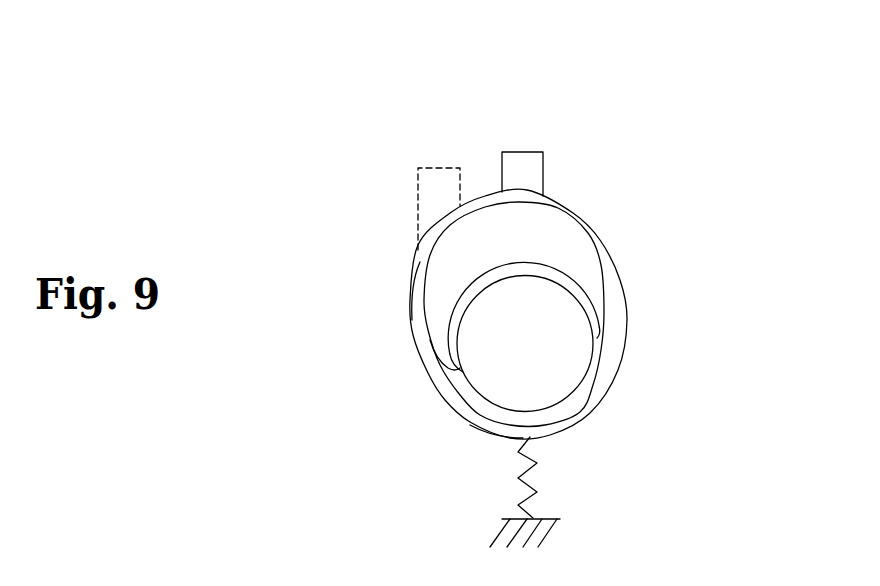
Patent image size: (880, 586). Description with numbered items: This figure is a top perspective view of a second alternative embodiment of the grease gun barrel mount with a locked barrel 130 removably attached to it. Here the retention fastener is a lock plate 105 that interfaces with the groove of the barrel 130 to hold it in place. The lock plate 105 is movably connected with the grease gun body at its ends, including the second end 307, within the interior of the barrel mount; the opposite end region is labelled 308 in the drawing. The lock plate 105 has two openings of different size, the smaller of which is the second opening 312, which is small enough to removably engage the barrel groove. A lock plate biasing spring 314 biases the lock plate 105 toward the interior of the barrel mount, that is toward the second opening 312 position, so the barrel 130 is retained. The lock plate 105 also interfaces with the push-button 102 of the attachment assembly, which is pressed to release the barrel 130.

The push-button 102 is at (410, 176).
The lock plate 105 is at (637, 337).
The barrel 130 is at (560, 265).
The second end 307 is at (460, 427).
The side ring wall portion 308 is at (400, 265).
The second opening 312 is at (601, 283).
The lock plate biasing spring 314 is at (522, 500).